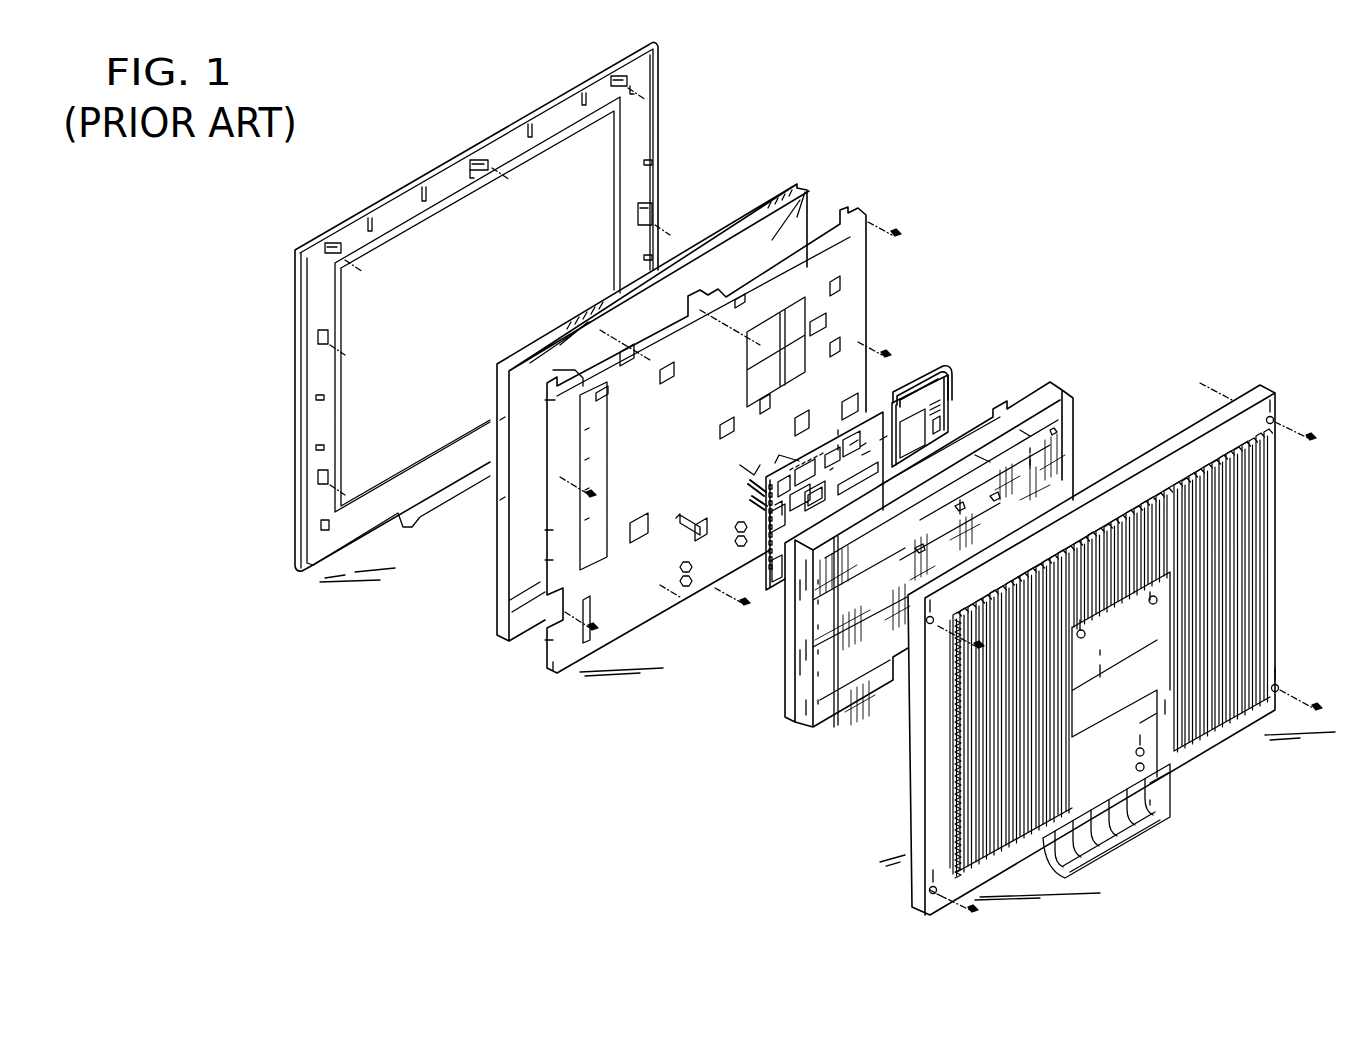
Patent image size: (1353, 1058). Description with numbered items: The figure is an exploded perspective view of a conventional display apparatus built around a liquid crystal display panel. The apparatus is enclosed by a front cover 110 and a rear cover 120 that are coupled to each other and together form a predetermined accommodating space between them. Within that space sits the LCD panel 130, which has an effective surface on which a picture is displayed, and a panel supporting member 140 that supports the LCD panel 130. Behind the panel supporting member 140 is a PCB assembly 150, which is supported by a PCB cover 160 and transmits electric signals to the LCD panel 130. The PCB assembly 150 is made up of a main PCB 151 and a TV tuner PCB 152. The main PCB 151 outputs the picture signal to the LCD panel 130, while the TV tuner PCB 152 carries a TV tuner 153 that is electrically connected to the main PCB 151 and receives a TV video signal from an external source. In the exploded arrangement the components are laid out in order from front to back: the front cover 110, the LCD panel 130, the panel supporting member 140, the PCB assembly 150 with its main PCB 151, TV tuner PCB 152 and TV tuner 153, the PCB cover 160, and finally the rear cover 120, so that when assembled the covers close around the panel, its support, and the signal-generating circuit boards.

The front cover 110 is at (658, 127).
The rear cover 120 is at (1162, 452).
The liquid crystal display (LCD) panel 130 is at (795, 187).
The panel supporting member 140 is at (848, 216).
The PCB assembly 150 is at (982, 293).
The main PCB 151 is at (860, 413).
The TV tuner PCB 152 is at (927, 400).
The TV tuner 153 is at (935, 400).
The PCB cover 160 is at (1057, 397).